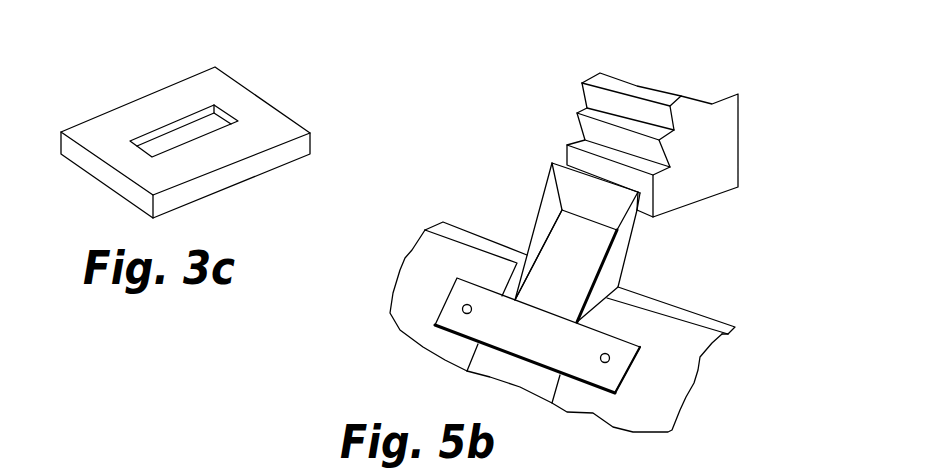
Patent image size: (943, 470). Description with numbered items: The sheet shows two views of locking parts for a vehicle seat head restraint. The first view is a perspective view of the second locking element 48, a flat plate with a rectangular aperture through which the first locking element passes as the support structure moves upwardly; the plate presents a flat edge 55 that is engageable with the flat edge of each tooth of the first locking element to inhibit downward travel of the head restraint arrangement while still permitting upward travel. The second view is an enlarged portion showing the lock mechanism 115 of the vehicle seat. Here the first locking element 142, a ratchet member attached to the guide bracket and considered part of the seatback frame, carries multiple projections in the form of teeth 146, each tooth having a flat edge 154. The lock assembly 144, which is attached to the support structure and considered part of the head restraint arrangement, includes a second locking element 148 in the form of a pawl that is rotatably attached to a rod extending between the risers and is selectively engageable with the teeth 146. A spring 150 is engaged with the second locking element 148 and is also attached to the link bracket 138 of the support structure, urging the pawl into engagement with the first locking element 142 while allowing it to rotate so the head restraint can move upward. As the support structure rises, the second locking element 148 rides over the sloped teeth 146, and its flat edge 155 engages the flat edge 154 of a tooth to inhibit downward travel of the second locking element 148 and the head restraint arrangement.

In FIG. 3C, the second locking element 48 is at (98, 137).
In FIG. 3C, the flat edge 55 is at (133, 157).
In FIG. 5B, the lock mechanism 115 is at (627, 160).
In FIG. 5B, the link bracket 138 is at (393, 297).
In FIG. 5B, the first locking element 142 is at (627, 143).
In FIG. 5B, the lock assembly 144 is at (662, 283).
In FIG. 5B, the teeth 146 is at (577, 131).
In FIG. 5B, the second locking element 148 is at (589, 278).
In FIG. 5B, the spring 150 is at (540, 228).
In FIG. 5B, the flat edge 154 is at (582, 107).
In FIG. 5B, the flat edge 155 is at (643, 218).